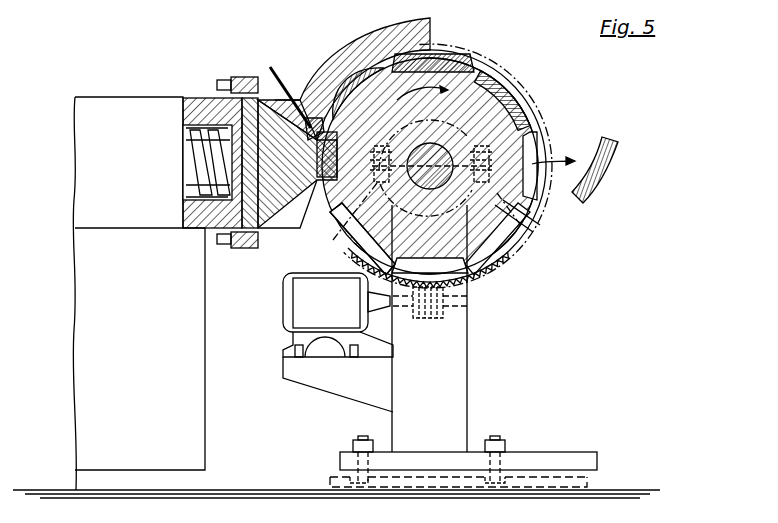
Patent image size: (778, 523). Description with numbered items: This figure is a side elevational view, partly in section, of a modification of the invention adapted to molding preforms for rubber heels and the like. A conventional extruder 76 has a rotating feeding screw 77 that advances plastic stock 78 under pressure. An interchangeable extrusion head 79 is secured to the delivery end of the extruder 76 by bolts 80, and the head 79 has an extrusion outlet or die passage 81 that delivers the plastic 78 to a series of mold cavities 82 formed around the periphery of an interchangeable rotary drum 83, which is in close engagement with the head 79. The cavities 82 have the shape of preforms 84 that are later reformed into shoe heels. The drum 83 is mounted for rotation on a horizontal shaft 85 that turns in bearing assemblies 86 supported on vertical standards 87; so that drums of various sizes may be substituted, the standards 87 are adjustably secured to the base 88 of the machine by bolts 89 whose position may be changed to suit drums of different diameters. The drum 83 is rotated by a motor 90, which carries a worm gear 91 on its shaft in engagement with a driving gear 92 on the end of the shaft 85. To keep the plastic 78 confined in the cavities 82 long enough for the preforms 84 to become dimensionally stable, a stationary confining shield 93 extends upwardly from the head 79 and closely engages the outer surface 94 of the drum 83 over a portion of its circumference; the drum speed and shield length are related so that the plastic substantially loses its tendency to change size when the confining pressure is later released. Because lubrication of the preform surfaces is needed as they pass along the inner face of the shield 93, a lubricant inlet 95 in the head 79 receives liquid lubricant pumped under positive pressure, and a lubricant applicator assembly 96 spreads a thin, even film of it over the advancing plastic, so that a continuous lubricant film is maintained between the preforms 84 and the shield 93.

The extruder 76 is at (113, 110).
The feeding screw 77 is at (195, 156).
The plastic stock 78 is at (262, 215).
The extrusion head 79 is at (288, 100).
The bolts 80 is at (218, 84).
The die passage 81 is at (310, 215).
The mold cavities 82 is at (437, 50).
The rotary drum 83 is at (510, 215).
The preforms 84 is at (588, 138).
The horizontal shaft 85 is at (352, 256).
The bearing assemblies 86 is at (545, 226).
The vertical standards 87 is at (465, 400).
The base 88 is at (592, 462).
The bolts 89 is at (505, 445).
The motor 90 is at (338, 342).
The worm gear 91 is at (440, 325).
The driving gear 92 is at (488, 285).
The confining shield 93 is at (346, 62).
The outer surface 94 is at (368, 66).
The lubricant inlet 95 is at (270, 67).
The lubricant applicator assembly 96 is at (314, 118).